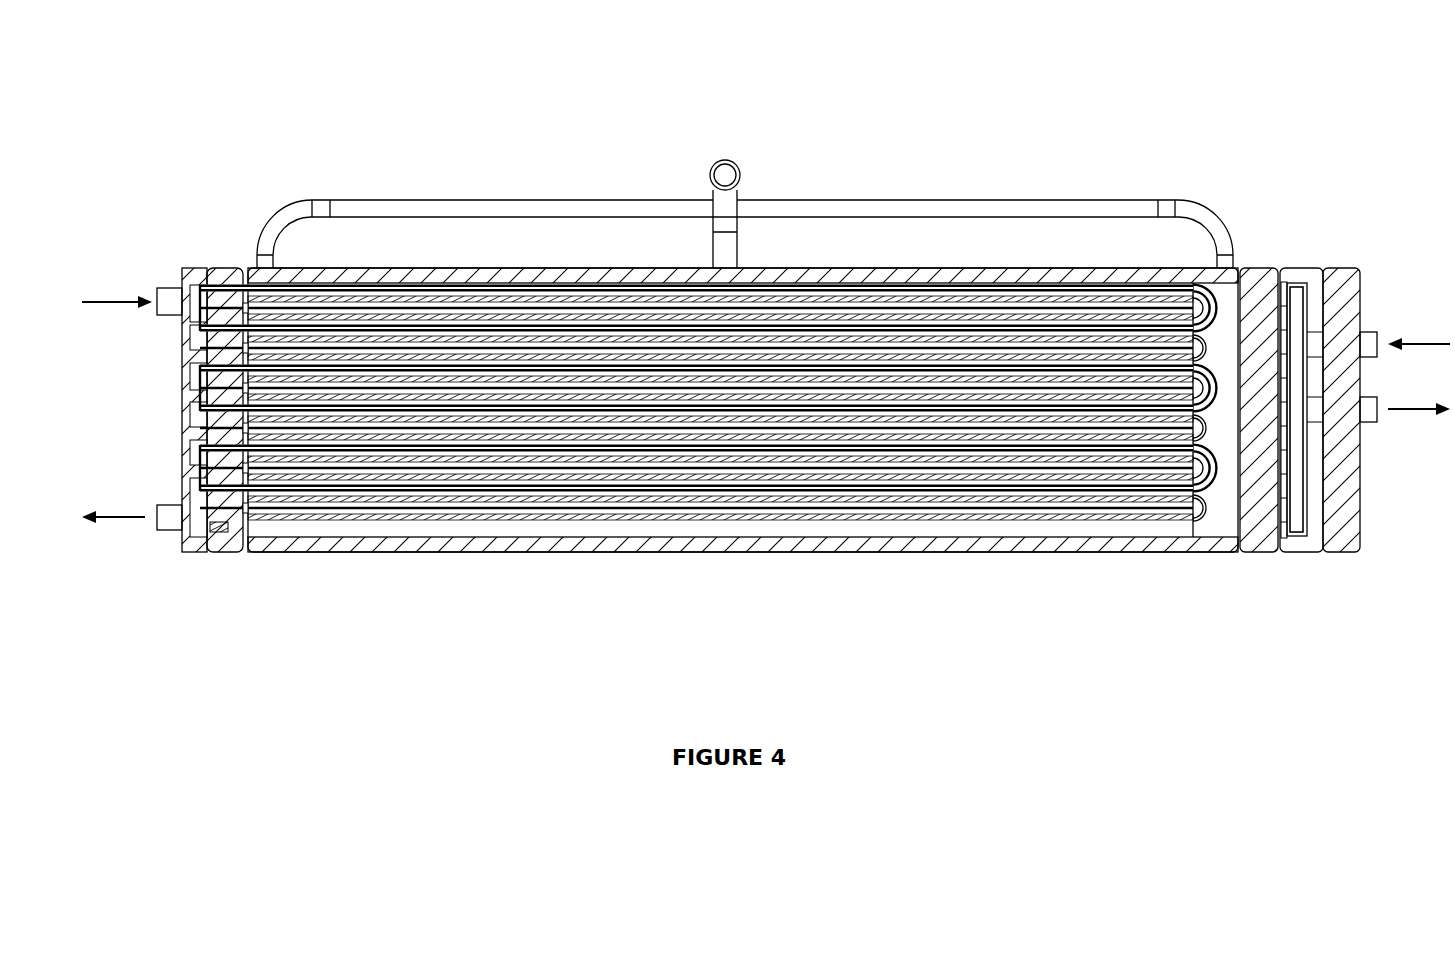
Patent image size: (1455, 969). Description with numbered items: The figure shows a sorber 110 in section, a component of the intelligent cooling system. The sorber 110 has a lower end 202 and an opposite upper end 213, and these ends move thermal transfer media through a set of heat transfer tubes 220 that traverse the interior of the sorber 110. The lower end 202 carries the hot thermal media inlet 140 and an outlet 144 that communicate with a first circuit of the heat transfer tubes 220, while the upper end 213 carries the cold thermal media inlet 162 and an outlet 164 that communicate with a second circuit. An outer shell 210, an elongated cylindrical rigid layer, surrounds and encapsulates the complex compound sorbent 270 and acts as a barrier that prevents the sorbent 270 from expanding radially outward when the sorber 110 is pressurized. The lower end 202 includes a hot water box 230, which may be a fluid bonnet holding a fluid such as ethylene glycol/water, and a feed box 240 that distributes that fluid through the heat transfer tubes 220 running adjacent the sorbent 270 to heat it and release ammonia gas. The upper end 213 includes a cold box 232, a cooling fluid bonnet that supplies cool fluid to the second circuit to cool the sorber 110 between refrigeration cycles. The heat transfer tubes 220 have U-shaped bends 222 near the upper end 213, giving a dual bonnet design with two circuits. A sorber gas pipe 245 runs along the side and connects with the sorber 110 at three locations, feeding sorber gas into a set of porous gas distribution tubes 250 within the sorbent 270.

The sorber 110 is at (350, 102).
The lower end 202 is at (208, 238).
The hot thermal media inlet 140 is at (158, 296).
The outlet 144 is at (157, 515).
The cold thermal media inlet 162 is at (1376, 340).
The outlet 164 is at (1376, 422).
The outer shell 210 is at (990, 552).
The upper end 213 is at (1289, 238).
The heat transfer tubes 220 is at (742, 487).
The bends 222 is at (1219, 549).
The hot water box 230 is at (199, 553).
The cold box 232 is at (1337, 553).
The feed box 240 is at (224, 553).
The sorber gas pipe 245 is at (905, 205).
The porous gas distribution tubes 250 is at (1203, 278).
The complex compound sorbent 270 is at (608, 505).